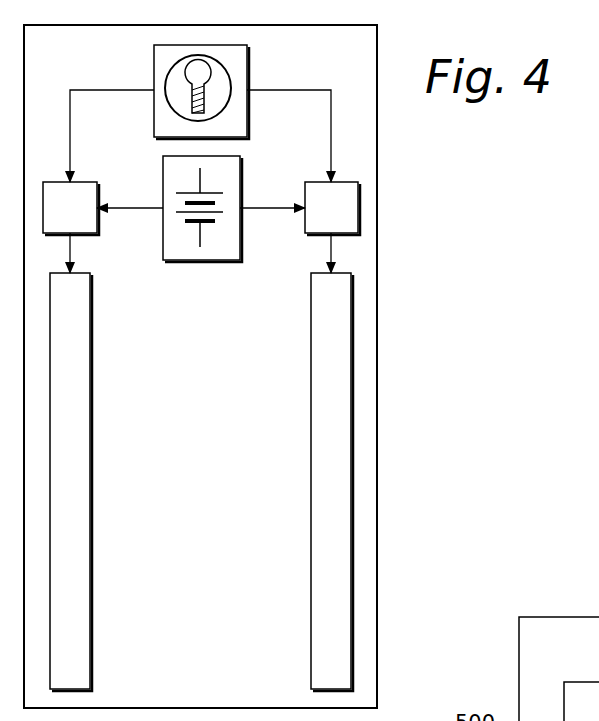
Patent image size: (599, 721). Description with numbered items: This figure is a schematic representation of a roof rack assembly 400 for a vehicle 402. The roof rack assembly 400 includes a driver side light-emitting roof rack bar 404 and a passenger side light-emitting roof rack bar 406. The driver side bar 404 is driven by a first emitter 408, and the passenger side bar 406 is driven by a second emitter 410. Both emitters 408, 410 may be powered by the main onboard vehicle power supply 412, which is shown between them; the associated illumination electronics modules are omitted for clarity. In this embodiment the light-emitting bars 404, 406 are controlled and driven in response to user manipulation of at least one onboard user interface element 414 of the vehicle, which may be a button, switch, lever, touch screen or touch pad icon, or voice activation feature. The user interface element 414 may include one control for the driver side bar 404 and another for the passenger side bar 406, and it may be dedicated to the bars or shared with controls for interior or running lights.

The roof rack assembly 400 is at (354, 170).
The vehicle 402 is at (378, 212).
The driver side light-emitting roof rack bar 404 is at (91, 374).
The passenger side light-emitting roof rack bar 406 is at (310, 360).
The first emitter 408 is at (85, 236).
The second emitter 410 is at (312, 236).
The main onboard vehicle power supply 412 is at (200, 261).
The onboard user interface element 414 is at (248, 62).